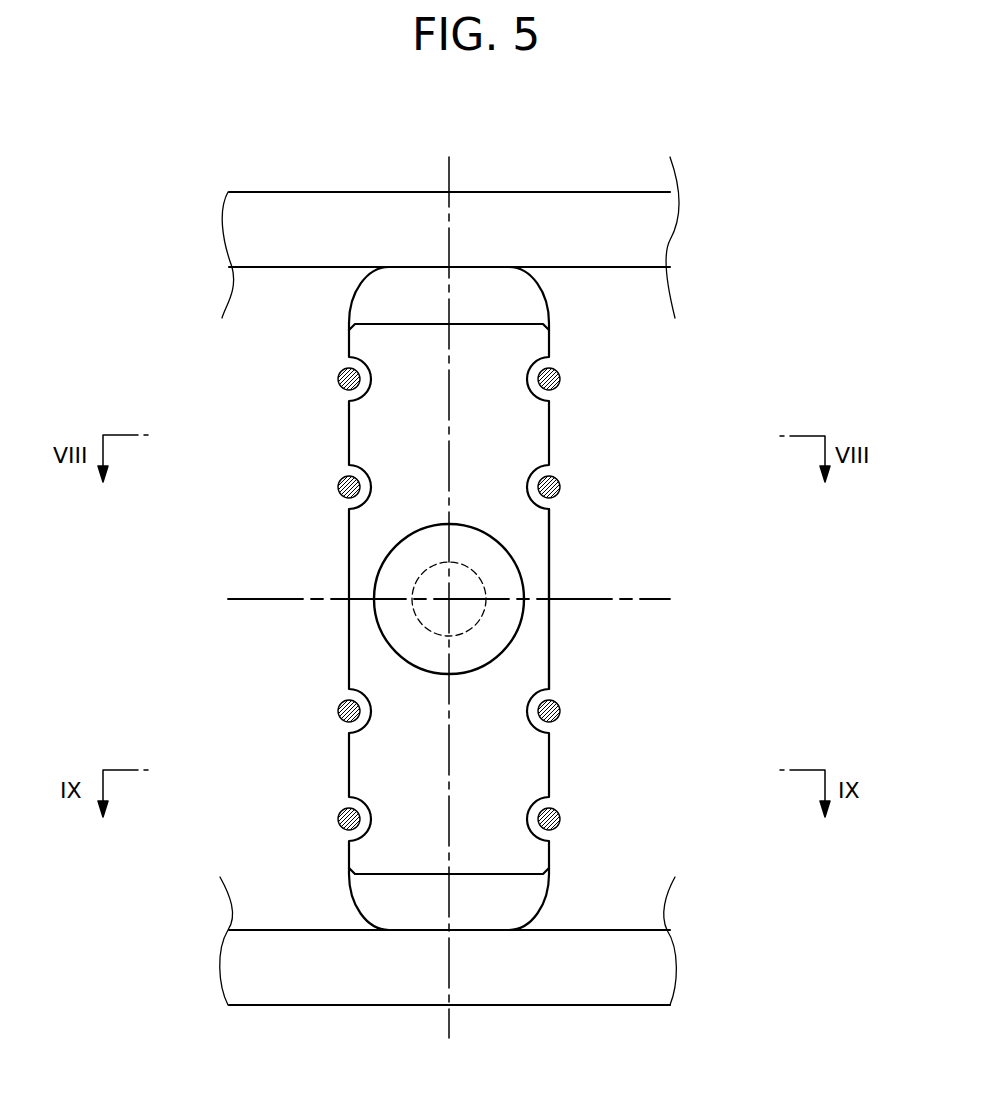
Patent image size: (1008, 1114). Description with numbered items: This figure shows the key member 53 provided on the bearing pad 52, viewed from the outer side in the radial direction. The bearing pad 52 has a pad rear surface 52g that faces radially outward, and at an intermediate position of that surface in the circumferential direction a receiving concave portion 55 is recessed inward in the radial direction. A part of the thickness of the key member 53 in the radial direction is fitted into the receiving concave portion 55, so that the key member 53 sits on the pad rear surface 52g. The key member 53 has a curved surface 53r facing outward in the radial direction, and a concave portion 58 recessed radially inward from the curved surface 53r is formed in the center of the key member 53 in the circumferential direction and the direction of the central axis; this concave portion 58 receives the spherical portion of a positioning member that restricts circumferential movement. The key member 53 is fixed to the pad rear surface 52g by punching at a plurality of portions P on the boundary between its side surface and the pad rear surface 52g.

The bearing pad 52 is at (627, 220).
The pad rear surface 52g is at (592, 292).
The key member 53 is at (550, 563).
The curved surface 53r is at (407, 350).
The receiving concave portion 55 is at (548, 642).
The concave portion 58 is at (405, 537).
The portions P is at (339, 386).